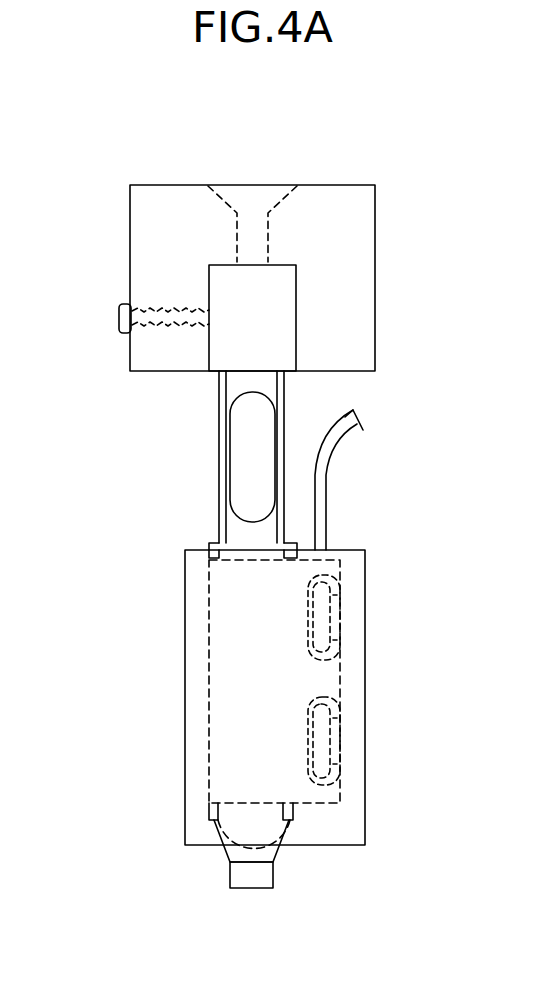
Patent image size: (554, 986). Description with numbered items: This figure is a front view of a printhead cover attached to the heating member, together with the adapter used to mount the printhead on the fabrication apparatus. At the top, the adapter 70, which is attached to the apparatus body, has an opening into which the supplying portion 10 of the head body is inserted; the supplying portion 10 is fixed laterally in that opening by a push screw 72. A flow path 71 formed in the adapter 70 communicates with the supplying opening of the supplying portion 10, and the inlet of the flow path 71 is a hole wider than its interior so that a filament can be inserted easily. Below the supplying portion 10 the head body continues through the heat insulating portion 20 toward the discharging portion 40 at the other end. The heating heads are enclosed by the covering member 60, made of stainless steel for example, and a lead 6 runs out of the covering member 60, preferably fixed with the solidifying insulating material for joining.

The adapter 70 is at (173, 185).
The flow path 71 is at (267, 183).
The push screw 72 is at (122, 318).
The supplying portion 10 is at (281, 289).
The heat insulating portion 20 is at (219, 485).
The lead 6 is at (323, 493).
The covering member 60 is at (184, 668).
The discharging portion 40 is at (262, 877).